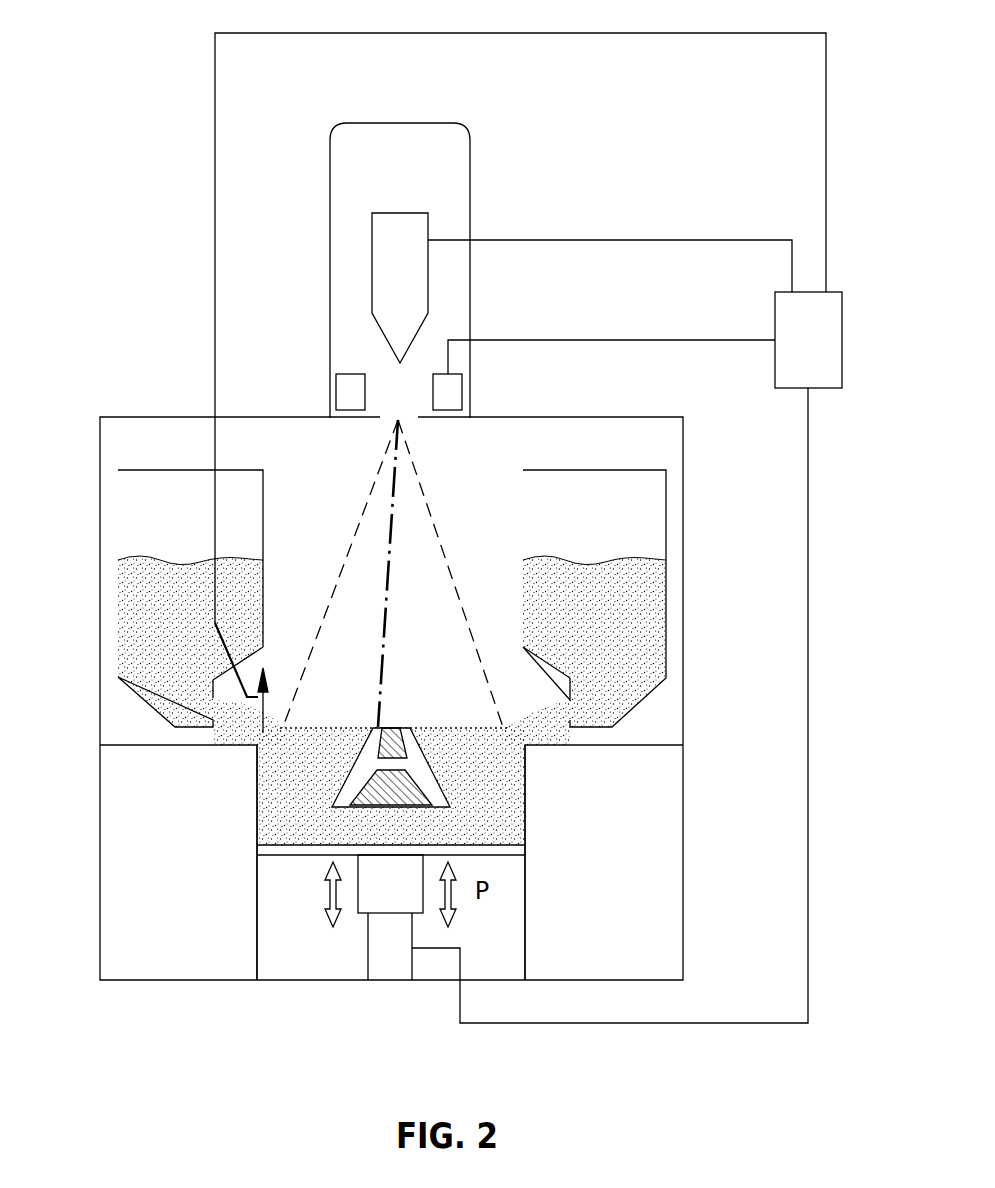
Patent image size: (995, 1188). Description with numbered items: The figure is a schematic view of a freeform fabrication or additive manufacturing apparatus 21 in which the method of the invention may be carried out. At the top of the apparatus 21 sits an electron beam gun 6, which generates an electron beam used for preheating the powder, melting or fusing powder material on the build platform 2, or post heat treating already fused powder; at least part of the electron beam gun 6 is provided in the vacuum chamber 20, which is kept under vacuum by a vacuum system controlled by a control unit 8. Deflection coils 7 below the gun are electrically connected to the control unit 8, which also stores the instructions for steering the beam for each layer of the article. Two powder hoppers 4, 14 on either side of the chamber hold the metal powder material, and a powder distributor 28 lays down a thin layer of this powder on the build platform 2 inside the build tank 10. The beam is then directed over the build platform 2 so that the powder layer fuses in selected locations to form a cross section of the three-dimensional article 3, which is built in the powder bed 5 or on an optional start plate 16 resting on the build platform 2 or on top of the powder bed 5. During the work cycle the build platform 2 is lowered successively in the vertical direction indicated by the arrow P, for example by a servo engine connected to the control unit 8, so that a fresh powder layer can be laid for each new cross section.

The additive manufacturing apparatus 21 is at (656, 150).
The vacuum chamber 20 is at (683, 922).
The electron beam gun 6 is at (386, 279).
The deflection coils 7 is at (345, 392).
The control unit 8 is at (627, 631).
The powder hopper 4 is at (200, 620).
The powder hopper 14 is at (608, 620).
The powder distributor 28 is at (262, 712).
The three-dimensional article 3 is at (355, 762).
The powder bed 5 is at (435, 775).
The start plate 16 is at (440, 805).
The build tank 10 is at (255, 910).
The build platform 2 is at (303, 857).